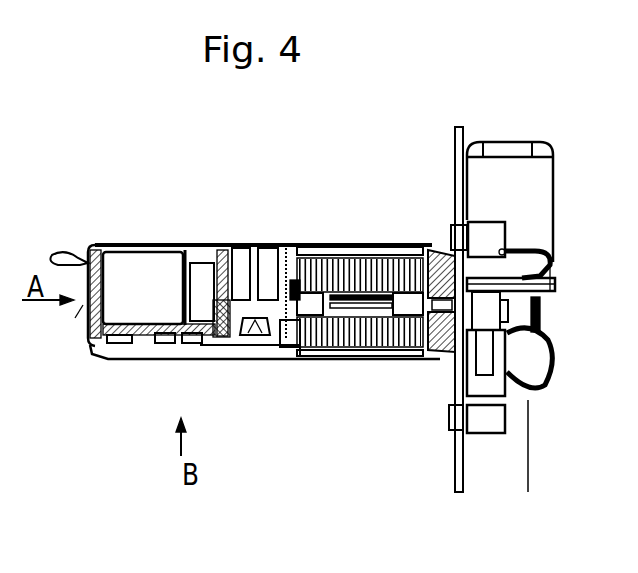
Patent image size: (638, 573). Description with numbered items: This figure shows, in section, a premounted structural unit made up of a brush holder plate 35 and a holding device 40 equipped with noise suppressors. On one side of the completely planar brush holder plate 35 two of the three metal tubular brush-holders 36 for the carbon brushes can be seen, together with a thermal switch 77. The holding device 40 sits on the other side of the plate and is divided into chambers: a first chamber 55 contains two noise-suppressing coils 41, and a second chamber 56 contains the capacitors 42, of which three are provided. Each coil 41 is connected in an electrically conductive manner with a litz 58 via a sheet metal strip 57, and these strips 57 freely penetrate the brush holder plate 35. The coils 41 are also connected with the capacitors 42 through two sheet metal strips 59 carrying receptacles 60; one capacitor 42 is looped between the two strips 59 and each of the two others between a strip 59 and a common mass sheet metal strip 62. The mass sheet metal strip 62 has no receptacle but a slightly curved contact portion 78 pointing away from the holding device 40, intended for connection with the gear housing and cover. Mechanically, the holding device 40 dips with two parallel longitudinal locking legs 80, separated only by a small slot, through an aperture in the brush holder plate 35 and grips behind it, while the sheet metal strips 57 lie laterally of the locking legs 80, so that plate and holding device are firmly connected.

The brush holder plate 35 is at (455, 462).
The tubular brush-holder 36 is at (483, 234).
The holding device 40 is at (222, 357).
The noise-suppressing coil 41 is at (354, 250).
The capacitor 42 is at (130, 256).
The first chamber 55 is at (400, 357).
The second chamber 56 is at (188, 265).
The sheet metal strip 57 is at (426, 252).
The litz 58 is at (555, 180).
The sheet metal strip 59 is at (280, 350).
The receptacle 60 is at (272, 255).
The mass sheet metal strip 62 is at (70, 355).
The thermal switch 77 is at (518, 182).
The contact portion 78 is at (63, 246).
The locking leg 80 is at (473, 315).